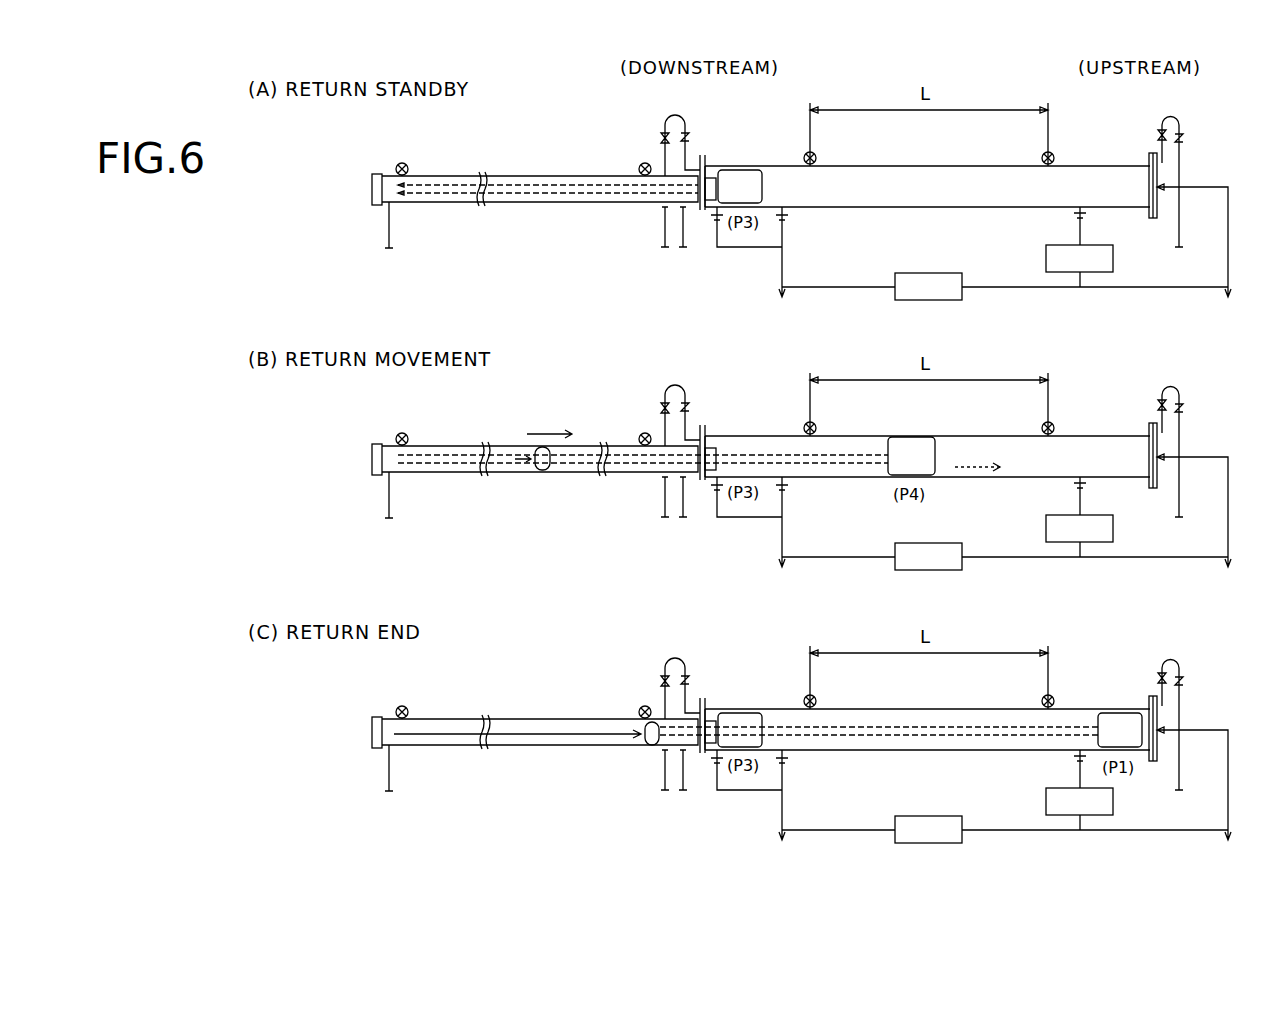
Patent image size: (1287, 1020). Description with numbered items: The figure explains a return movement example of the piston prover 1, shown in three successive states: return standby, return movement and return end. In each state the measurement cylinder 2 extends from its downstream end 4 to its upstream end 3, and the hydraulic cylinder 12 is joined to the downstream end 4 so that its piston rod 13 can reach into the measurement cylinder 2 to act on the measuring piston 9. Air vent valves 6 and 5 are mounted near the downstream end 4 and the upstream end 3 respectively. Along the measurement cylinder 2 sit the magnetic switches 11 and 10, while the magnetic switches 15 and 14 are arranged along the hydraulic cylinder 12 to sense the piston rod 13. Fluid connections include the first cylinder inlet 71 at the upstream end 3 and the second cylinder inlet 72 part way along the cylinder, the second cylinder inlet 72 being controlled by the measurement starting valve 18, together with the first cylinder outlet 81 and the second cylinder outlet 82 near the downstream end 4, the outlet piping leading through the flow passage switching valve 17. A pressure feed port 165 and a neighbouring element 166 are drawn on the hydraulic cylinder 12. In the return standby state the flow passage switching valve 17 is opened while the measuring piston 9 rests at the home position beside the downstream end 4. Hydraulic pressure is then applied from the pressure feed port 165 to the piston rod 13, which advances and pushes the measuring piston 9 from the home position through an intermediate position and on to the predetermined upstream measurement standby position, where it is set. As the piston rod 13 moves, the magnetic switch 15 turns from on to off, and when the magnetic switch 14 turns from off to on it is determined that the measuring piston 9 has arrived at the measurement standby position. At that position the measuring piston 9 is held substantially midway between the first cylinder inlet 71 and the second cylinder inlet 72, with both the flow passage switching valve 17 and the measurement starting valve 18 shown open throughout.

The piston prover 1 is at (766, 141).
The measurement cylinder 2 is at (990, 208).
The upstream end 3 is at (1160, 170).
The downstream end 4 is at (702, 213).
The air vent valve 5 is at (1174, 116).
The air vent valve 6 is at (672, 116).
The measuring piston 9 is at (1139, 166).
The magnetic switch 10 is at (1052, 153).
The magnetic switch 11 is at (814, 153).
The hydraulic cylinder 12 is at (524, 176).
The piston rod 13 is at (566, 203).
The magnetic switch 14 is at (644, 162).
The magnetic switch 15 is at (403, 162).
The flow passage switching valve 17 is at (937, 273).
The measurement starting valve 18 is at (1115, 260).
The first cylinder inlet 71 is at (1155, 219).
The second cylinder inlet 72 is at (1075, 213).
The first cylinder outlet 81 is at (724, 226).
The second cylinder outlet 82 is at (788, 214).
The pressure feed port 165 is at (392, 205).
The support 166 is at (665, 207).